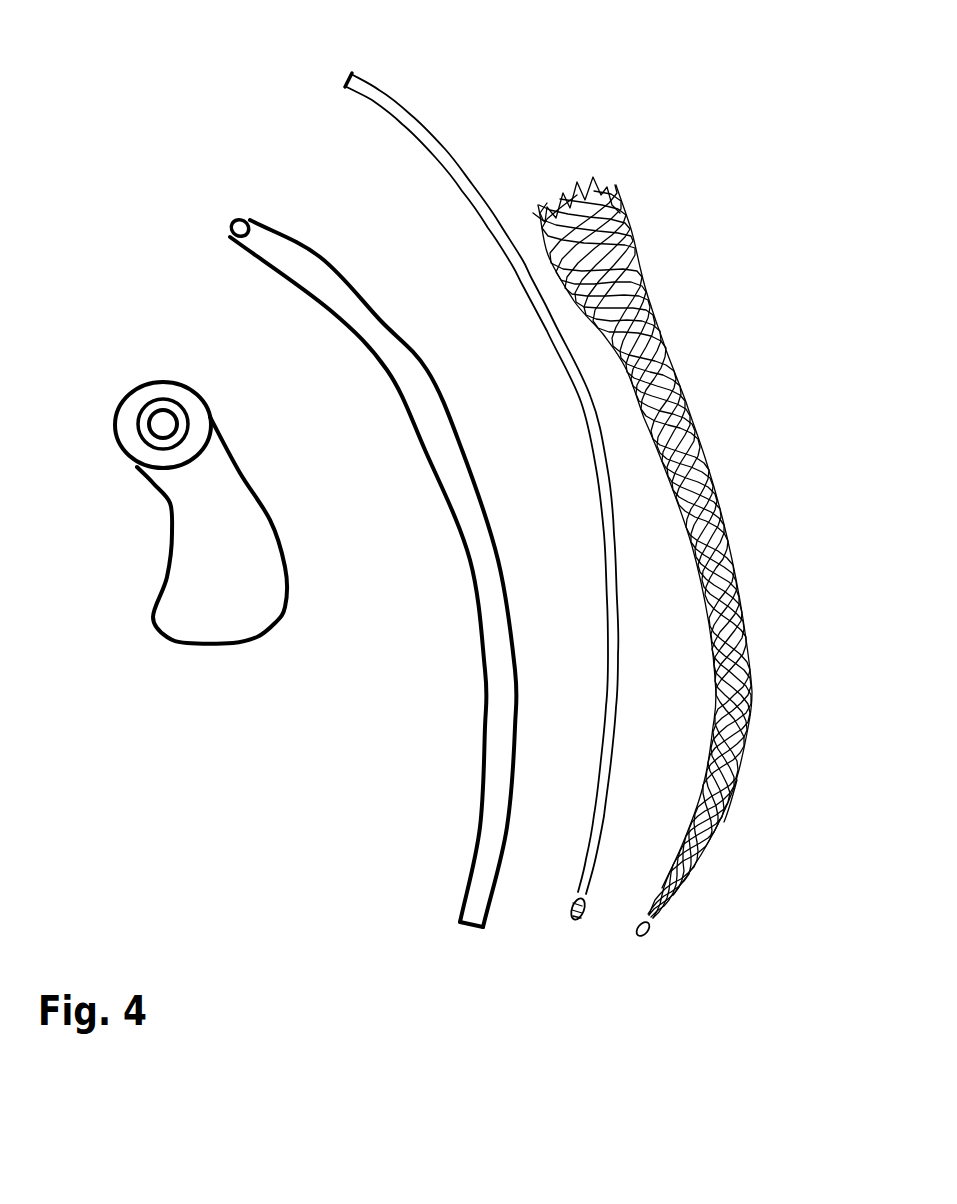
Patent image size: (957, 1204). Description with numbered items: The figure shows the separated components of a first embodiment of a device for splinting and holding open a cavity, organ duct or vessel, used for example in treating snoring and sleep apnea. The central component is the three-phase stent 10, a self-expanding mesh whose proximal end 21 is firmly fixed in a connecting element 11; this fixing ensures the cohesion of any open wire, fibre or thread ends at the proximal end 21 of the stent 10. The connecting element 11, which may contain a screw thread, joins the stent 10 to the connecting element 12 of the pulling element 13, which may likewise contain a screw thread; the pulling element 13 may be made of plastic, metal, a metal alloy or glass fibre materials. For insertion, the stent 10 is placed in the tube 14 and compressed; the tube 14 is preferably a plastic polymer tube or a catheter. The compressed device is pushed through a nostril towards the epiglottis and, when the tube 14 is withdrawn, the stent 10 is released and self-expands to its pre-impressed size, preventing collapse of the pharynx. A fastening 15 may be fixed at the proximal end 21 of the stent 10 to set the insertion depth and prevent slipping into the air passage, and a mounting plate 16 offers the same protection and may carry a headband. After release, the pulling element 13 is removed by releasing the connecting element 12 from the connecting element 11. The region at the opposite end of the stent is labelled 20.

The three-phase stent 10 is at (663, 332).
The connecting element 11 is at (647, 933).
The connecting element 12 is at (582, 927).
The pulling element 13 is at (390, 100).
The tube 14 is at (378, 303).
The fastening 15 is at (160, 403).
The mounting plate 16 is at (237, 567).
The proximal end of stent 20 is at (573, 183).
The proximal end 21 is at (728, 808).